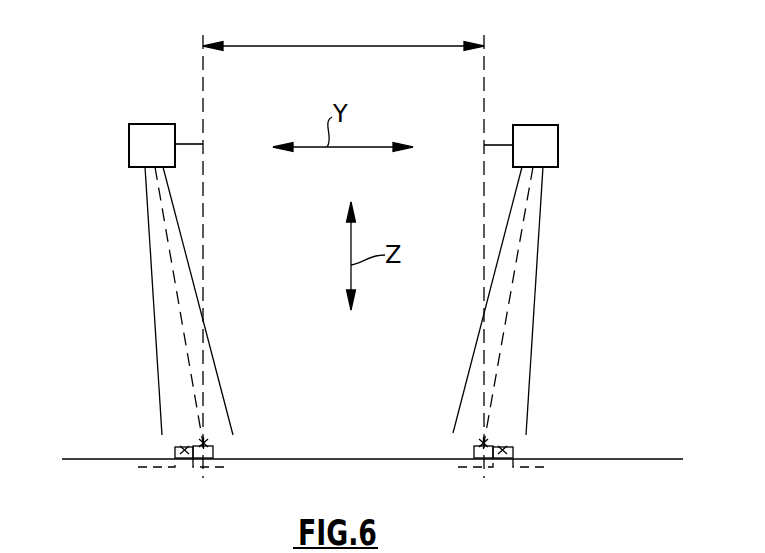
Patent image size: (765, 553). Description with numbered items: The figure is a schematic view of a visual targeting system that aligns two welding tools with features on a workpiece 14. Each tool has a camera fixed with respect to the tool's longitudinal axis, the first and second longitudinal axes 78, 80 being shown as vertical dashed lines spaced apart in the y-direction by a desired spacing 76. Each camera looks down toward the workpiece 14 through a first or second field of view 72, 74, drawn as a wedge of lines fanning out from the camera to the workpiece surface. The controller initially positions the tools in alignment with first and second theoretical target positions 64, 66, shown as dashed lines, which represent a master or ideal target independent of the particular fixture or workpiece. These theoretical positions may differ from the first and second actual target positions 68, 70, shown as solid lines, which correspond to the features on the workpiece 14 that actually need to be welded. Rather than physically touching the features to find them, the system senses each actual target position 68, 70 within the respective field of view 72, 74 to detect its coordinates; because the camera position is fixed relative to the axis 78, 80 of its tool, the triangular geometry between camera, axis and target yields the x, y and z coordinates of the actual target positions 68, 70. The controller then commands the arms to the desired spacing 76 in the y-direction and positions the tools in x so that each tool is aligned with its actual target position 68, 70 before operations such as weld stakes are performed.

The workpiece 14 is at (610, 459).
The first theoretical target position 64 is at (184, 450).
The second theoretical target position 66 is at (482, 443).
The first actual target position 68 is at (205, 443).
The second actual target position 70 is at (506, 450).
The first field of view 72 is at (154, 322).
The second field of view 74 is at (533, 320).
The desired spacing 76 is at (325, 46).
The first longitudinal axis 78 is at (203, 98).
The second longitudinal axis 80 is at (484, 98).